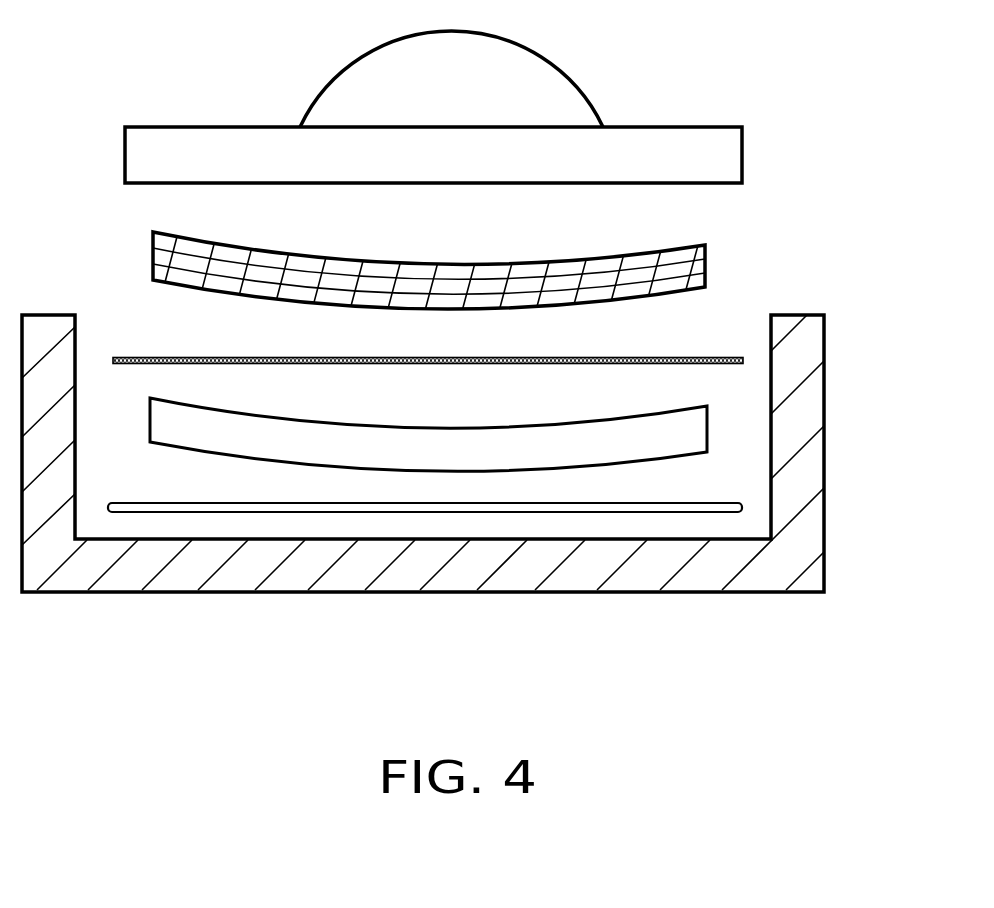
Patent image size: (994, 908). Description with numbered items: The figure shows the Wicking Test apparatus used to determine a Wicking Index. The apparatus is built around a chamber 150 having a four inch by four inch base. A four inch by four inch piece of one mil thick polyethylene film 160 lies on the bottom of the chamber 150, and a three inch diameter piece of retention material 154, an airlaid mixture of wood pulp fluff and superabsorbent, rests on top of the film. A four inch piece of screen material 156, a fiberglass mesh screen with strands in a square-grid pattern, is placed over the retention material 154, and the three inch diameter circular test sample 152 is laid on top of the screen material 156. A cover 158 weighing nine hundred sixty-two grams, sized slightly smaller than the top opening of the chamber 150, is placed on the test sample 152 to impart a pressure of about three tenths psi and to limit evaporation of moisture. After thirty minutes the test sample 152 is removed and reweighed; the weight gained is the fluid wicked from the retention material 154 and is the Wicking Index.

The chamber 150 is at (827, 517).
The test sample 152 is at (708, 263).
The retention material 154 is at (498, 435).
The screen material 156 is at (666, 356).
The cover 158 is at (648, 127).
The polyethylene film 160 is at (649, 514).